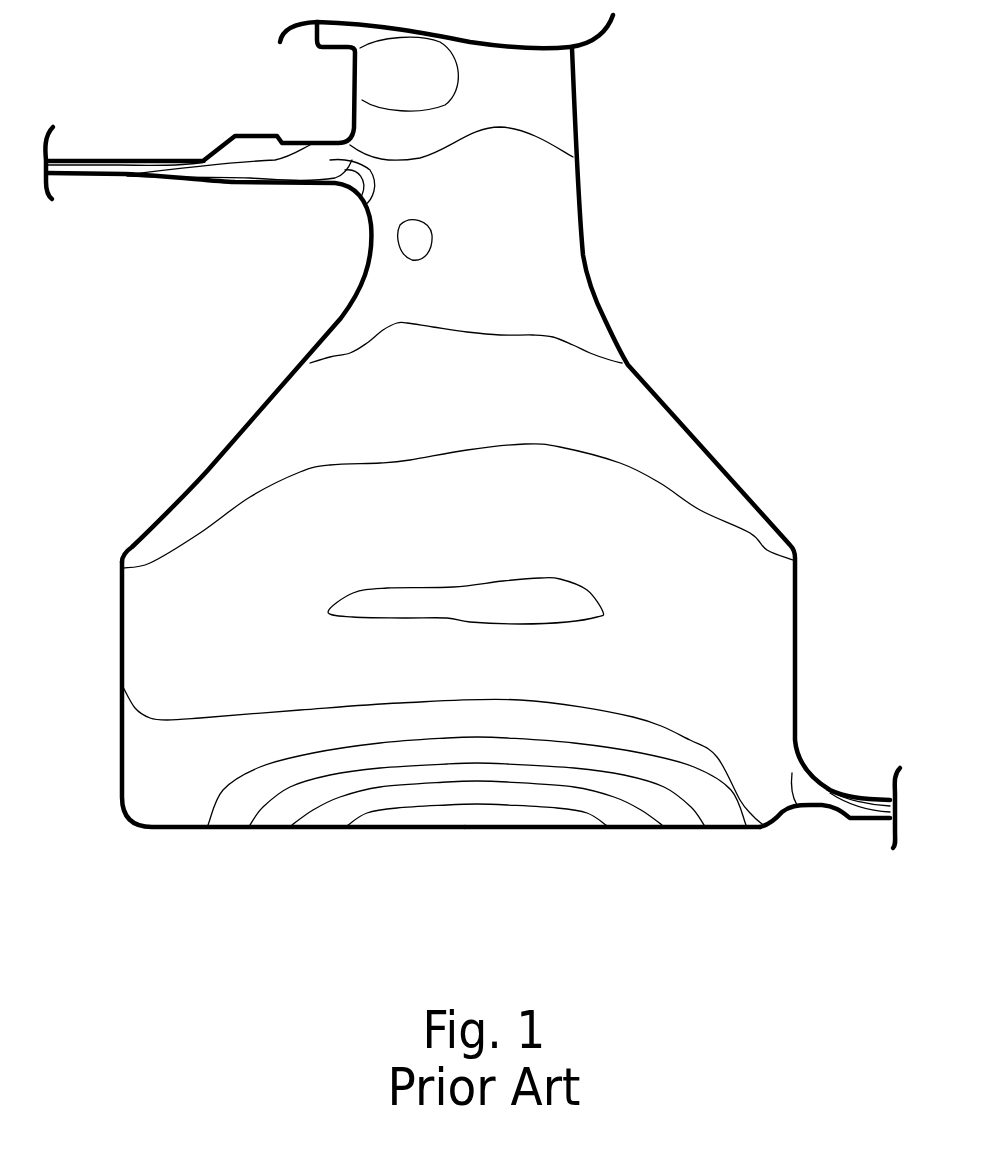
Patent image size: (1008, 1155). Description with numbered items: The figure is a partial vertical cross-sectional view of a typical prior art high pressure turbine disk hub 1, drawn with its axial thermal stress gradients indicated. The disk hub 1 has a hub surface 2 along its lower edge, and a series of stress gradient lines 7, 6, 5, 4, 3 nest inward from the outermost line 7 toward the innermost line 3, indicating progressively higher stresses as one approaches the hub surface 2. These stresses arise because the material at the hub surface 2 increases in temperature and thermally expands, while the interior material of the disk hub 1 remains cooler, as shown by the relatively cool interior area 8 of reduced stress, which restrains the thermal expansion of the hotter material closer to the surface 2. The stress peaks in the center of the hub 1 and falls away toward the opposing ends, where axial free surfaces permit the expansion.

The disk hub 1 is at (240, 388).
The hub surface 2 is at (227, 827).
The stress gradient line 3 is at (465, 818).
The stress gradient line 4 is at (592, 818).
The stress gradient line 5 is at (645, 818).
The stress gradient line 6 is at (692, 818).
The stress gradient line 7 is at (732, 818).
The cool interior area 8 is at (575, 598).